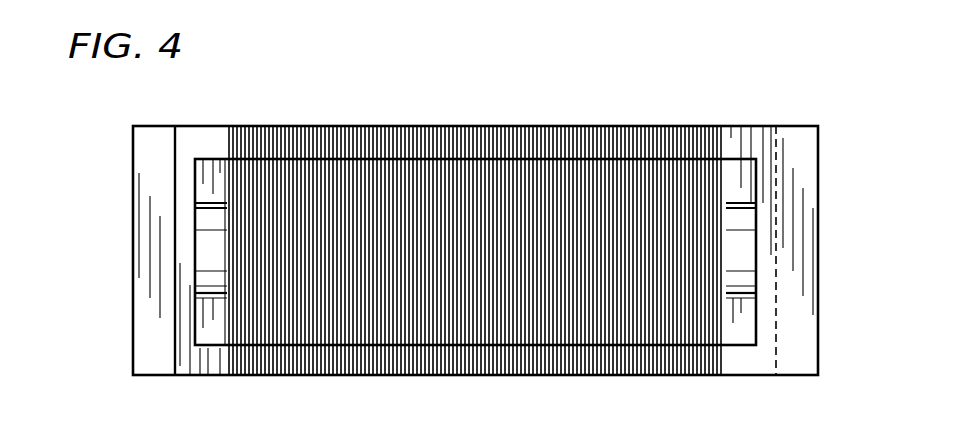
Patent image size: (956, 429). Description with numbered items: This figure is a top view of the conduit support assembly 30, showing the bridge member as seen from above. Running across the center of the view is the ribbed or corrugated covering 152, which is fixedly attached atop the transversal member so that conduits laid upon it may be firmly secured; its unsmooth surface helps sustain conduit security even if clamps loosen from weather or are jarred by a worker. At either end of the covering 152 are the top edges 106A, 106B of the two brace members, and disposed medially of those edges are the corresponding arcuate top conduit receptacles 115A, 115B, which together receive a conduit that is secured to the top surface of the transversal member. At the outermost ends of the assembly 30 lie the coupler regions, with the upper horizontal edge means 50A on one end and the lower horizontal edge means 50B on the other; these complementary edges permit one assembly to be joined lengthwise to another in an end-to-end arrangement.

The connector assembly 30 is at (812, 162).
The ribbed or corrugated covering 152 is at (418, 133).
The upper horizontal edge means 50A is at (785, 355).
The lower horizontal edge means 50B is at (145, 341).
The top edges of brace member 106A is at (740, 305).
The top edges of brace member 106B is at (192, 180).
The top conduit receptacle 115A is at (737, 242).
The top conduit receptacle 115B is at (197, 246).